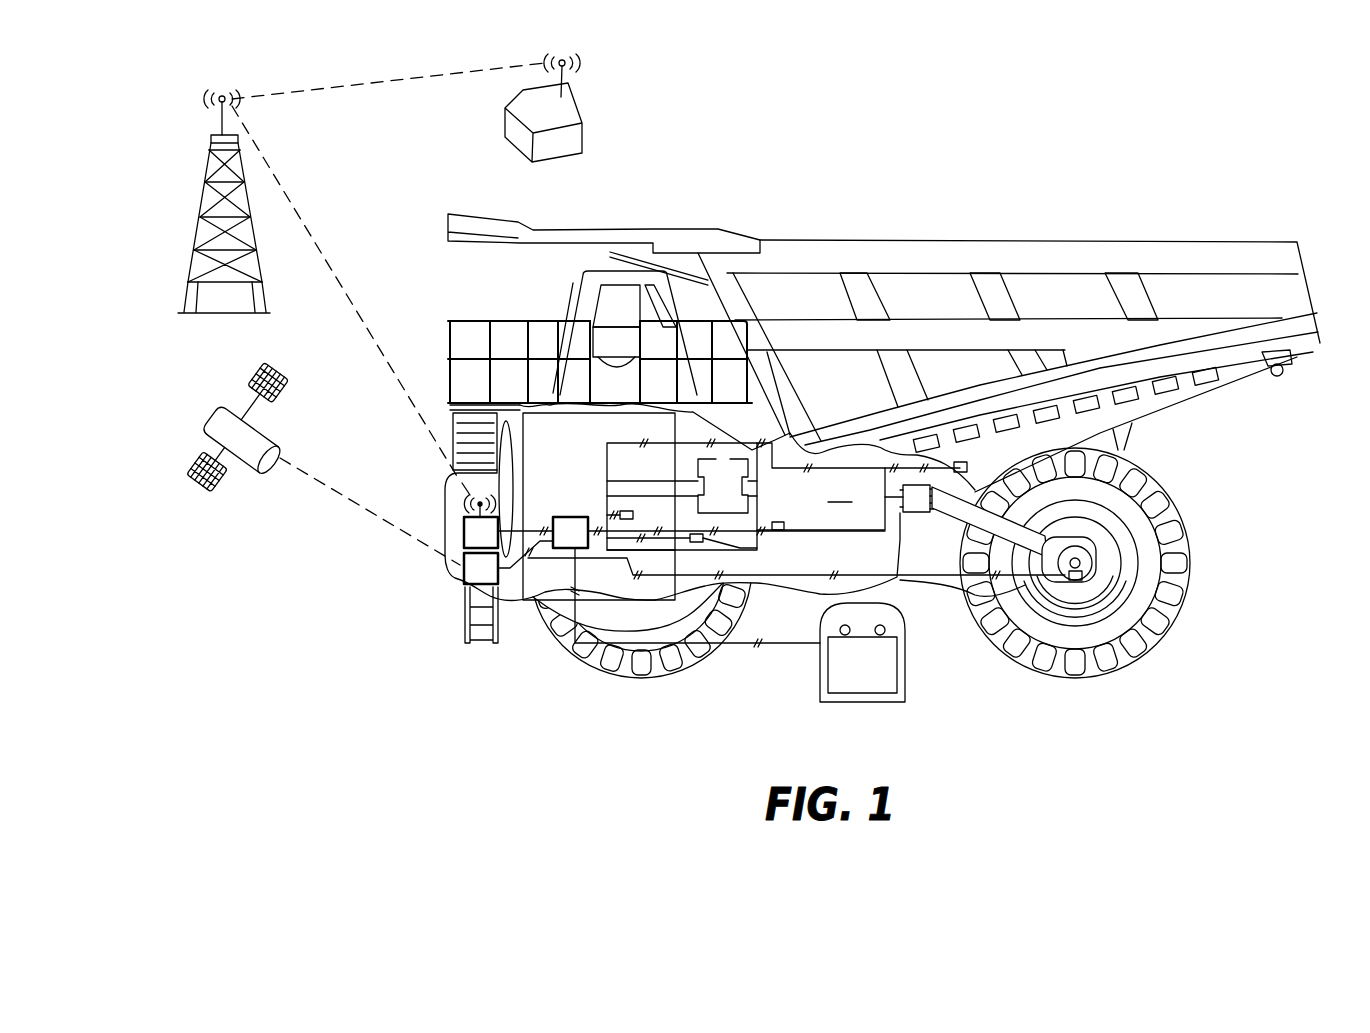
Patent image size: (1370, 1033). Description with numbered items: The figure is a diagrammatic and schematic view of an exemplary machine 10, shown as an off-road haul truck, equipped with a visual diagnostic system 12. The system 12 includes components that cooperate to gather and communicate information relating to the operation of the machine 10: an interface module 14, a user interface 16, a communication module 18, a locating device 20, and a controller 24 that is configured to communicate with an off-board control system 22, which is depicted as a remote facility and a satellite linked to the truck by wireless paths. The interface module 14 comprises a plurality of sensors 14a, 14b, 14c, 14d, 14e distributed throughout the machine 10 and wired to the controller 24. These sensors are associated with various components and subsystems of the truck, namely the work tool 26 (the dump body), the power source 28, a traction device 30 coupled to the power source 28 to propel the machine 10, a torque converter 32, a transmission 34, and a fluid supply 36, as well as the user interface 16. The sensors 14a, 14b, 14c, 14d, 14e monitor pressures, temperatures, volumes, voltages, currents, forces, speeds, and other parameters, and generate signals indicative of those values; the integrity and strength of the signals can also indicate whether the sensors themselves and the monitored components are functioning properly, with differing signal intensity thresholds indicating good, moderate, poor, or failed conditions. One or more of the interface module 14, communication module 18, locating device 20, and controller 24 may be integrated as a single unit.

The machine 10 is at (882, 441).
The visual diagnostic system 12 is at (611, 282).
The interface module 14 is at (623, 438).
The sensor 14a is at (960, 462).
The sensor 14b is at (625, 512).
The sensor 14c is at (784, 525).
The sensor 14d is at (705, 540).
The sensor 14e is at (1085, 580).
The user interface 16 is at (905, 662).
The communication module 18 is at (493, 545).
The locating device 20 is at (493, 581).
The off-board control system 22 is at (580, 103).
The controller 24 is at (583, 545).
The work tool 26 is at (988, 271).
The power source 28 is at (584, 472).
The traction device 30 is at (583, 658).
The torque converter 32 is at (738, 499).
The transmission 34 is at (400, 80).
The fluid supply 36 is at (671, 602).